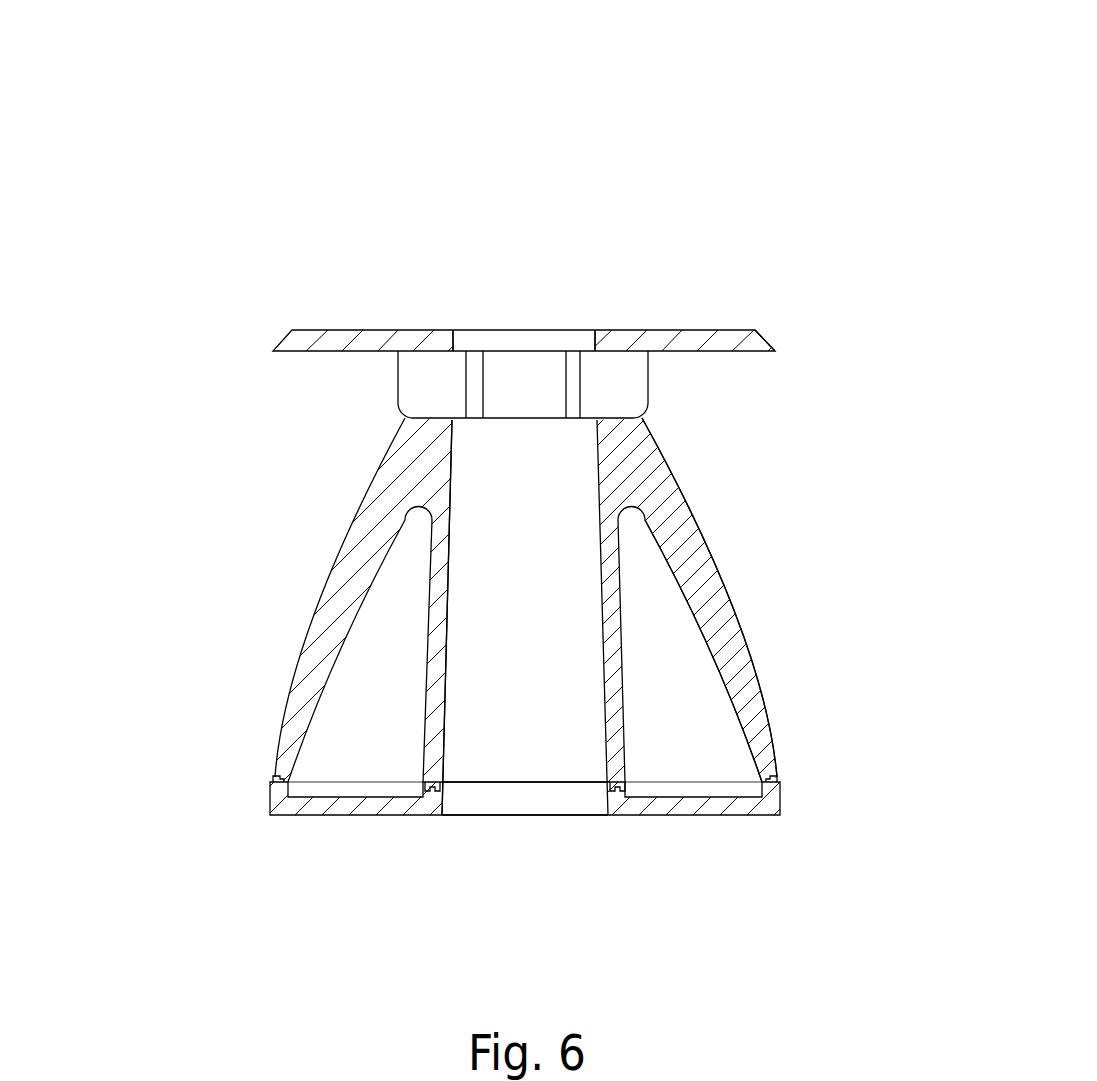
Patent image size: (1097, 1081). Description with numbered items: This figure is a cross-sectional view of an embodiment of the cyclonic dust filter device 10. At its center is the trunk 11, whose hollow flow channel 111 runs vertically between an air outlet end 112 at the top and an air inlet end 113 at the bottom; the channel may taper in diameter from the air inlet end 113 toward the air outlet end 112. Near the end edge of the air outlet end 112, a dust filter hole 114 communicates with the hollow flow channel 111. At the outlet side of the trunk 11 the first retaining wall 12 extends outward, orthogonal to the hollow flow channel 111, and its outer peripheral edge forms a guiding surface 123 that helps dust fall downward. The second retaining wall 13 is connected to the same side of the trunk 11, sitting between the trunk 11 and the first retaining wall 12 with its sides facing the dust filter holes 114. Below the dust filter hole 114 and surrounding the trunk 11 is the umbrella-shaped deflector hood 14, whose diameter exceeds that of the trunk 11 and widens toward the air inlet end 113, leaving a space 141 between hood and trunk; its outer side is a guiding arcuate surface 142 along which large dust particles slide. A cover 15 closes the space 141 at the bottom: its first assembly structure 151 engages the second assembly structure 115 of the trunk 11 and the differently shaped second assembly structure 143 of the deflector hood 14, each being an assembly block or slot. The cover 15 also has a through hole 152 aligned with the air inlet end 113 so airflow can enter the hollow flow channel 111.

The cyclonic dust filter device 10 is at (897, 40).
The trunk 11 is at (416, 585).
The hollow flow channel 111 is at (440, 651).
The air outlet end 112 is at (497, 322).
The air inlet end 113 is at (456, 774).
The dust filter hole 114 is at (488, 384).
The second assembly structure 115 is at (525, 786).
The first retaining wall 12 is at (660, 330).
The guiding surface 123 is at (766, 333).
The second retaining wall 13 is at (650, 378).
The deflector hood 14 is at (714, 526).
The space 141 is at (705, 672).
The guiding arcuate surface 142 is at (733, 607).
The second assembly structure 143 is at (525, 779).
The cover 15 is at (313, 807).
The first assembly structure 151 is at (436, 819).
The through hole 152 is at (562, 829).